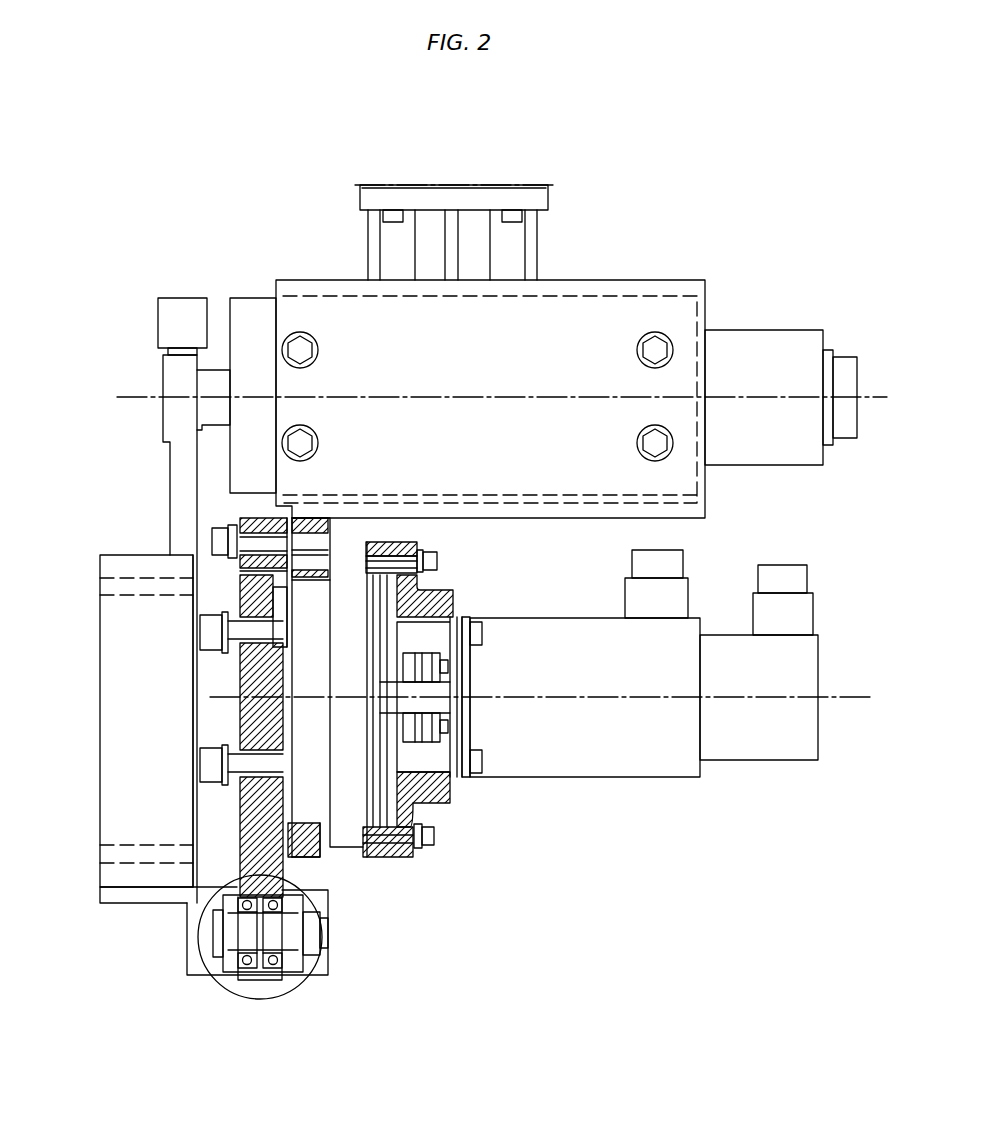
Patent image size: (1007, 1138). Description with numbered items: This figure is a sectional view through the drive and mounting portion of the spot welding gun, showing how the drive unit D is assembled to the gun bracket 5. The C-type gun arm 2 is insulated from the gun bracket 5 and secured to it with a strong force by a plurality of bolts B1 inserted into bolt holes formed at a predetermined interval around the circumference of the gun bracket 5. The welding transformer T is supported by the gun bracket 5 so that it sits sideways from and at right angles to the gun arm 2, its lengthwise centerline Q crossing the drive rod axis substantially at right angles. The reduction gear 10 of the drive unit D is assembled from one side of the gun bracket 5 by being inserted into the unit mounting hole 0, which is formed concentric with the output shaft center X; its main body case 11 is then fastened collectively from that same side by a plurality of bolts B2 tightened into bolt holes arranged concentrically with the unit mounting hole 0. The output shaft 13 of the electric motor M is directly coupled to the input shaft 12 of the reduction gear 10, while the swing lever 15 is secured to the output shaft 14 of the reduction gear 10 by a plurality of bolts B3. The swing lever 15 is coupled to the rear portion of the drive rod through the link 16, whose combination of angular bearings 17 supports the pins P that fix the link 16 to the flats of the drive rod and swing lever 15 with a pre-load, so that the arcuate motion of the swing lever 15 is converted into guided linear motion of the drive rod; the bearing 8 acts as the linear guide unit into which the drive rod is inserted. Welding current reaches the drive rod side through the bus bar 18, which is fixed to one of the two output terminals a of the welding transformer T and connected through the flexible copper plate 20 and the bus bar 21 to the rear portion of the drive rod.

The C-type gun arm 2 is at (253, 518).
The gun bracket 5 is at (428, 200).
The bearing 8 is at (250, 987).
The reduction gear 10 is at (410, 847).
The main body case 11 is at (450, 790).
The input shaft 12 is at (400, 612).
The output shaft of electric motor 13 is at (440, 690).
The output shaft 14 is at (367, 783).
The swing lever 15 is at (283, 863).
The link 16 is at (223, 900).
The combination of angular bearings 17 is at (272, 973).
The bus bar 18 is at (180, 503).
The flexible copper plate 20 is at (128, 700).
The bus bar 21 is at (110, 897).
The unit mounting hole 0 is at (307, 580).
The output terminals a is at (203, 383).
The bolts B1 is at (220, 543).
The bolts B2 is at (433, 562).
The bolts B3 is at (207, 632).
The drive unit D is at (562, 682).
The electric motor M is at (597, 762).
The pins P is at (292, 937).
The centerline Q is at (872, 395).
The welding transformer T is at (597, 323).
The output shaft center X is at (850, 690).